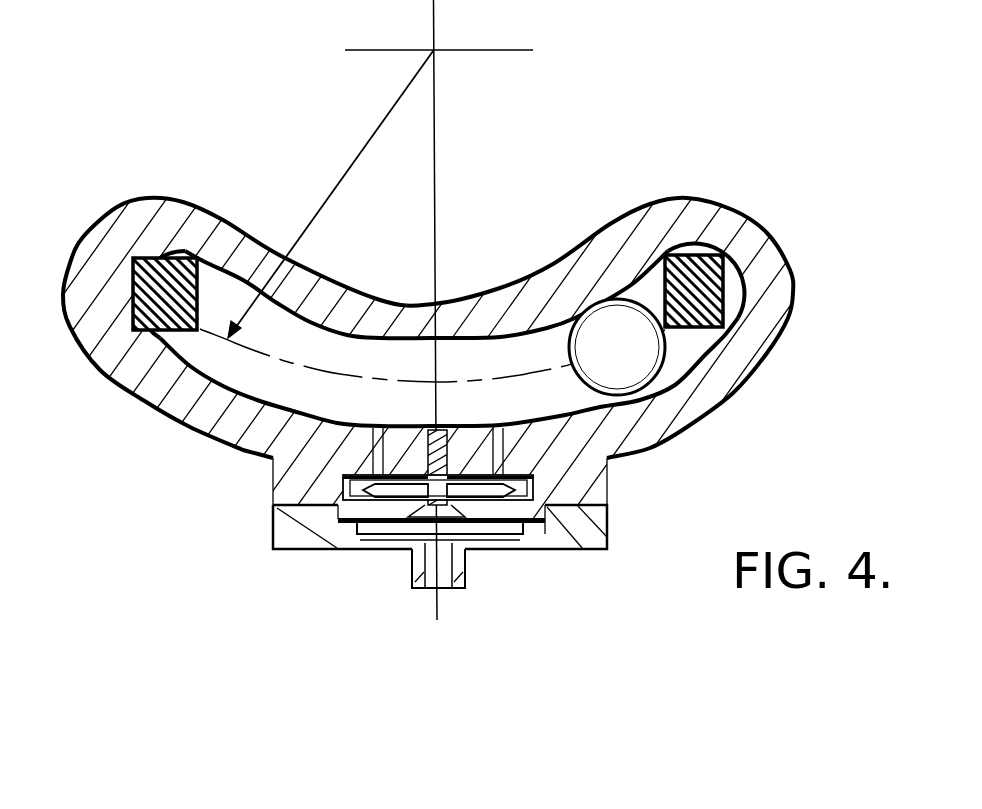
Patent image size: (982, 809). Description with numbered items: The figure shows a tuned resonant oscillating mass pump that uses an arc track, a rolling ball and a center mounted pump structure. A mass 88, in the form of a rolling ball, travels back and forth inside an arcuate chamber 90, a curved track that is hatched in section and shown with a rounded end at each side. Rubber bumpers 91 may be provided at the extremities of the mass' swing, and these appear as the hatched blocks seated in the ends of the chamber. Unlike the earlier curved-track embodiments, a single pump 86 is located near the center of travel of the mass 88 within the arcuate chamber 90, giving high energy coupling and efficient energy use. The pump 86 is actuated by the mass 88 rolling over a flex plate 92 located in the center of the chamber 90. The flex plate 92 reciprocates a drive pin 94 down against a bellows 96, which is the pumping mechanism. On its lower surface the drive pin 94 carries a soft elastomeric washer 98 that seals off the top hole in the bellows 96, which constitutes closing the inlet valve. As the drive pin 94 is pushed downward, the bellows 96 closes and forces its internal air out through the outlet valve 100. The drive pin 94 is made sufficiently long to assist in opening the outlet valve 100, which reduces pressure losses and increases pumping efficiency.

The pump 86 is at (400, 564).
The mass 88 is at (623, 310).
The arcuate chamber 90 is at (463, 372).
The rubber bumpers 91 is at (730, 238).
The flex plate 92 is at (403, 426).
The drive pin 94 is at (416, 437).
The bellows 96 is at (468, 478).
The soft elastomeric washer 98 is at (420, 517).
The outlet valve 100 is at (487, 535).